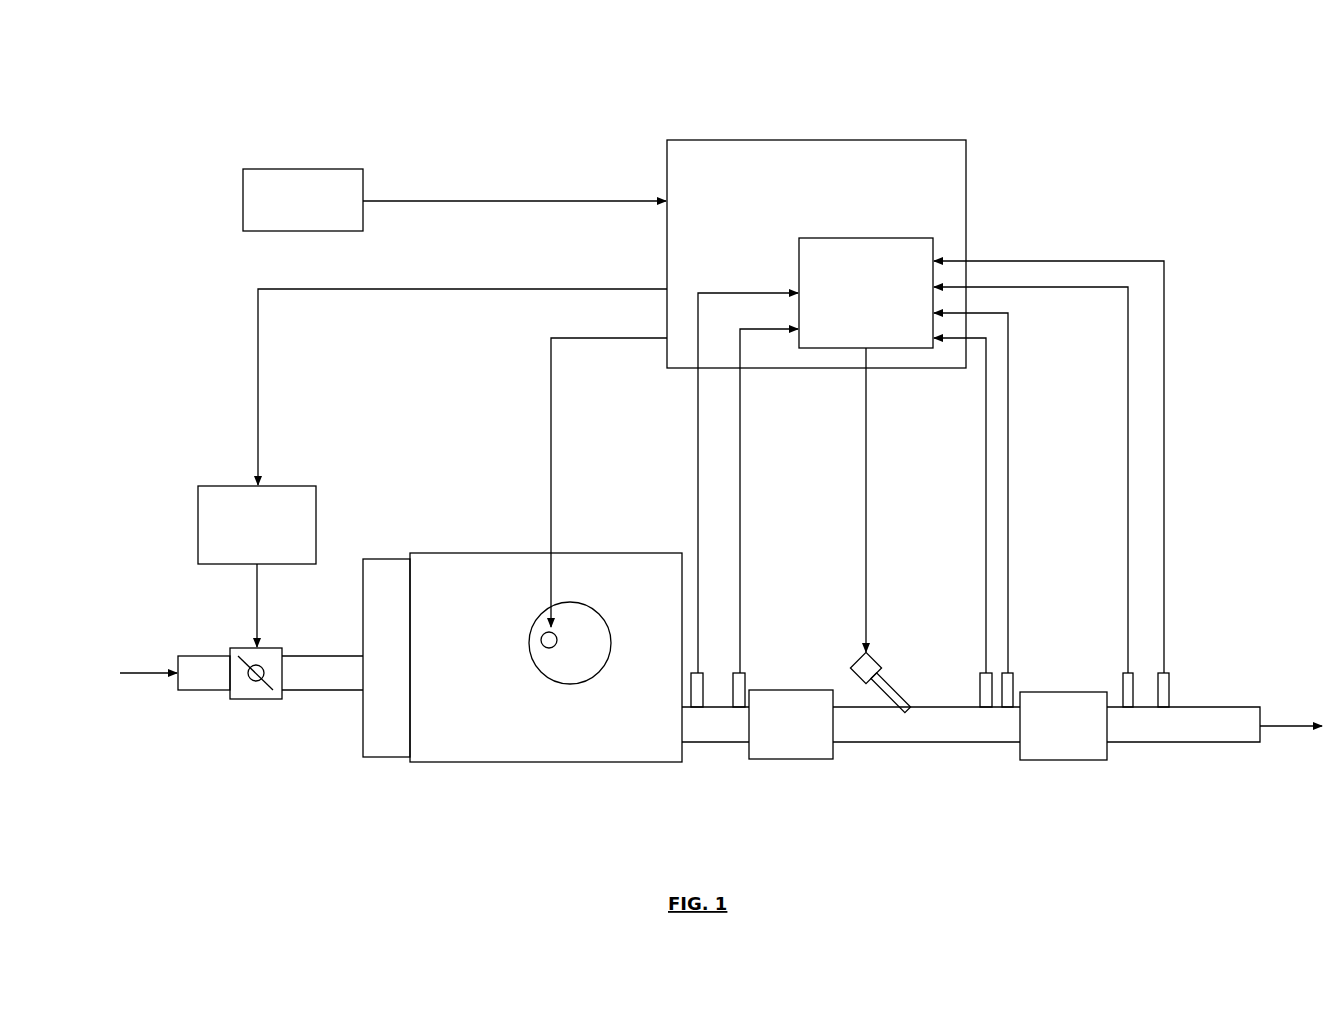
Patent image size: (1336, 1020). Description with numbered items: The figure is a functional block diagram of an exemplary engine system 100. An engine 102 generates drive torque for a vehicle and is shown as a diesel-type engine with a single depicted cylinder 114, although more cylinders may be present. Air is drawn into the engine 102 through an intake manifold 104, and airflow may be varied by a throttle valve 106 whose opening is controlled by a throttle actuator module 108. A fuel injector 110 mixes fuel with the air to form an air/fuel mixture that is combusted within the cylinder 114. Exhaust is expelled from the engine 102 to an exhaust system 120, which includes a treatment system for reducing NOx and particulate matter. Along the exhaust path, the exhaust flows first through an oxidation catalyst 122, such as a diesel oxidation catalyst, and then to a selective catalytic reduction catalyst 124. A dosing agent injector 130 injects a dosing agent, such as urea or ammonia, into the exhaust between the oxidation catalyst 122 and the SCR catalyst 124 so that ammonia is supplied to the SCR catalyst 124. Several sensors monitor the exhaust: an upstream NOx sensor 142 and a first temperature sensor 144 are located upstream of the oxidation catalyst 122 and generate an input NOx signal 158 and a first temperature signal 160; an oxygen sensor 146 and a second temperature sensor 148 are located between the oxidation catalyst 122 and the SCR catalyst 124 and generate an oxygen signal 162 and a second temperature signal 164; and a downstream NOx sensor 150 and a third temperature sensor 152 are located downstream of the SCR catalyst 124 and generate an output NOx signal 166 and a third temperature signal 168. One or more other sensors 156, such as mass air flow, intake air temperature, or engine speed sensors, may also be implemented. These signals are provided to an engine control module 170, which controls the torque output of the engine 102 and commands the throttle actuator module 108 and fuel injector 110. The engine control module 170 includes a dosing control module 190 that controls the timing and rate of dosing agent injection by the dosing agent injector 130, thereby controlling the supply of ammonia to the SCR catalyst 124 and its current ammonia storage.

The engine system 100 is at (224, 80).
The engine 102 is at (473, 553).
The intake manifold 104 is at (381, 559).
The throttle valve 106 is at (256, 699).
The throttle actuator module 108 is at (222, 486).
The fuel injector 110 is at (543, 637).
The cylinder 114 is at (573, 684).
The exhaust system 120 is at (1096, 866).
The oxidation catalyst 122 is at (800, 690).
The selective catalytic reduction catalyst 124 is at (1075, 760).
The dosing agent injector 130 is at (856, 660).
The upstream NOx sensor 142 is at (697, 710).
The first temperature sensor 144 is at (739, 710).
The oxygen sensor 146 is at (986, 710).
The second temperature sensor 148 is at (1008, 710).
The downstream NOx sensor 150 is at (1123, 673).
The third temperature sensor 152 is at (1164, 710).
The other sensors 156 is at (305, 169).
The input NOx signal 158 is at (698, 478).
The first temperature signal 160 is at (740, 478).
The oxygen signal 162 is at (986, 478).
The second temperature signal 164 is at (1008, 478).
The output NOx signal 166 is at (1128, 492).
The third temperature signal 168 is at (1164, 492).
The engine control module 170 is at (818, 140).
The dosing control module 190 is at (888, 238).